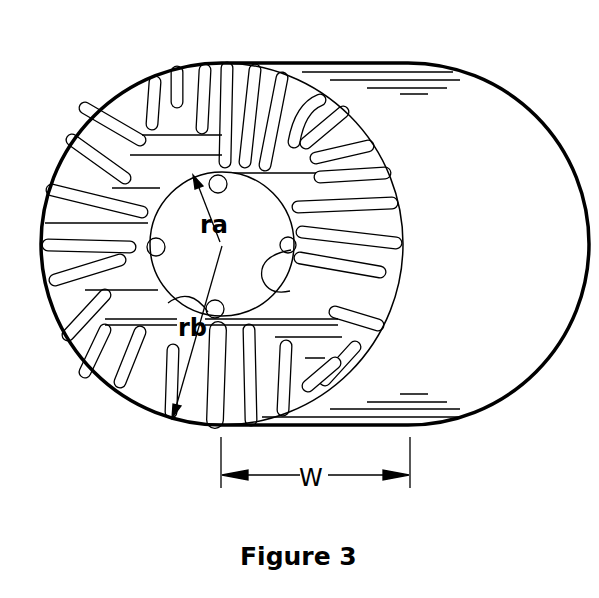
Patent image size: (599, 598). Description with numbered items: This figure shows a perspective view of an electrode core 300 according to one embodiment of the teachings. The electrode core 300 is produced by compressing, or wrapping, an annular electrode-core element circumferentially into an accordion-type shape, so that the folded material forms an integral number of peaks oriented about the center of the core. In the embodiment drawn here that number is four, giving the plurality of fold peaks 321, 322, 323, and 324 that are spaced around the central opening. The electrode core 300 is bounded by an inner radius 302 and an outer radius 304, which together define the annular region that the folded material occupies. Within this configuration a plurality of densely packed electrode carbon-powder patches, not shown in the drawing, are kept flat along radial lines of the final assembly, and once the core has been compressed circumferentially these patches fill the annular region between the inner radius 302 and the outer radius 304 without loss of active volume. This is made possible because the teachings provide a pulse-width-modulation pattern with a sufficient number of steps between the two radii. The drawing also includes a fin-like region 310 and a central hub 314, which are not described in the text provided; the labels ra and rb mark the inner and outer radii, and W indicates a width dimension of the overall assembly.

The electrode core 300 is at (525, 489).
The inner radius 302 is at (363, 128).
The outer radius 304 is at (404, 258).
The fins 310 is at (175, 63).
The central hub 314 is at (283, 206).
The fold peak 321 is at (215, 173).
The fold peak 322 is at (278, 290).
The fold peak 323 is at (178, 298).
The fold peak 324 is at (152, 260).